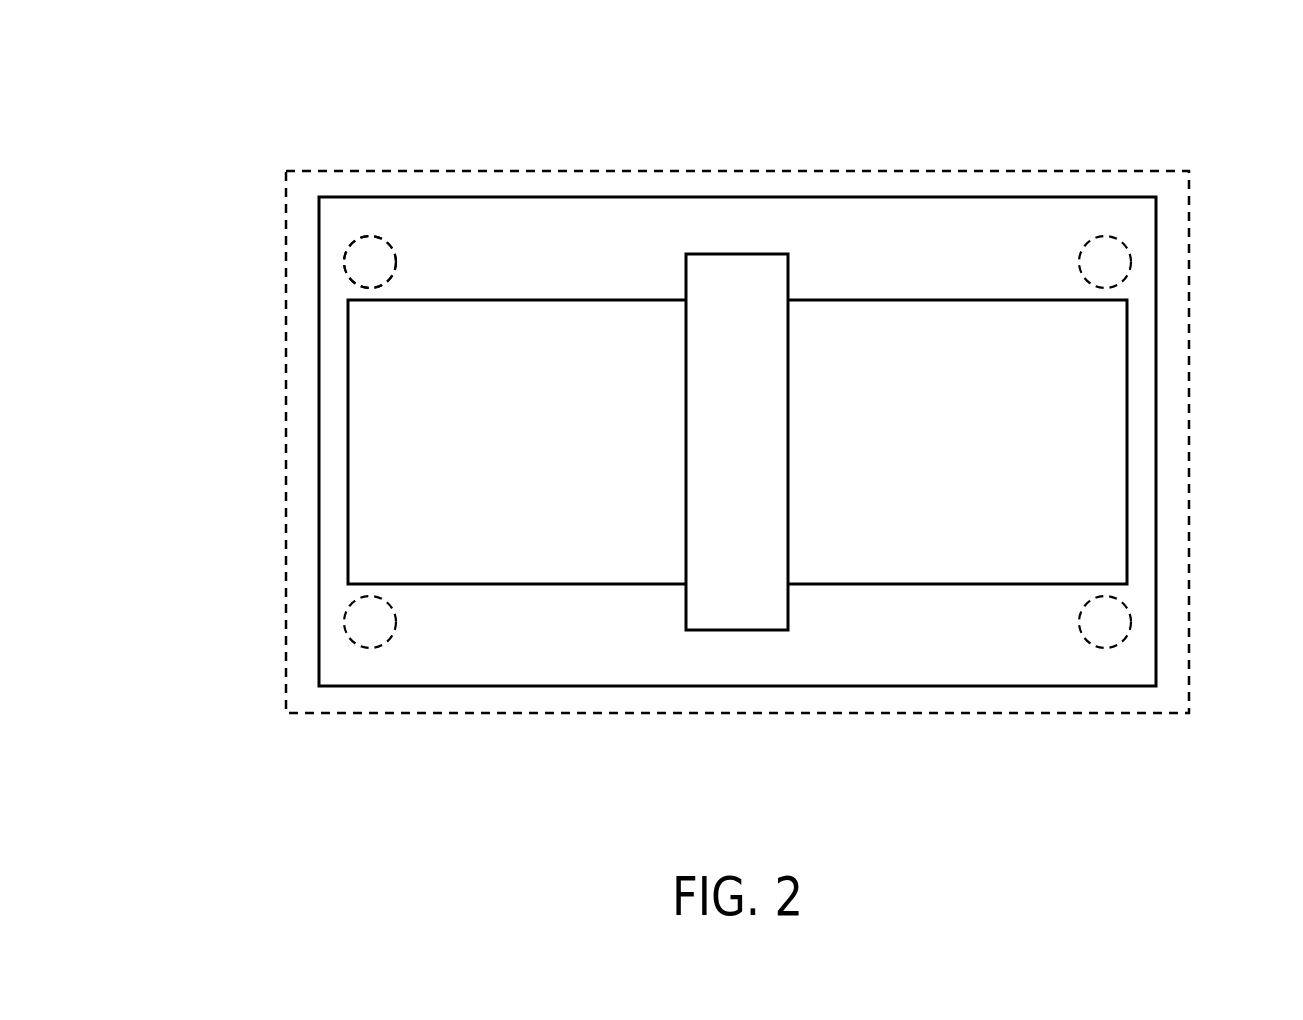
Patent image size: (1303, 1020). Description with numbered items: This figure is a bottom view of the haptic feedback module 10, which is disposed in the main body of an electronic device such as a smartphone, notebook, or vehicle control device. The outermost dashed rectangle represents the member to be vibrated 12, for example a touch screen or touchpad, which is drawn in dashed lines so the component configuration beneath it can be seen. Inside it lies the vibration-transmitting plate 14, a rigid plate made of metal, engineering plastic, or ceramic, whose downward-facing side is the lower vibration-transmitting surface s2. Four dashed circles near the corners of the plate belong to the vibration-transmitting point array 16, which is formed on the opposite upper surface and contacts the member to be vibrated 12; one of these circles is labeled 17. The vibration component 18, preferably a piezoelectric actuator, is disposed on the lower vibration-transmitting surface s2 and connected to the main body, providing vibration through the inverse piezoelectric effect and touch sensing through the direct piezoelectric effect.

The haptic feedback module 10 is at (252, 100).
The member to be vibrated 12 is at (285, 352).
The vibration-transmitting plate 14 is at (318, 410).
The vibration-transmitting point array 16 is at (340, 255).
The mounting holes 17 is at (370, 250).
The vibration component 18 is at (1095, 438).
The lower vibration-transmitting surface s2 is at (942, 220).